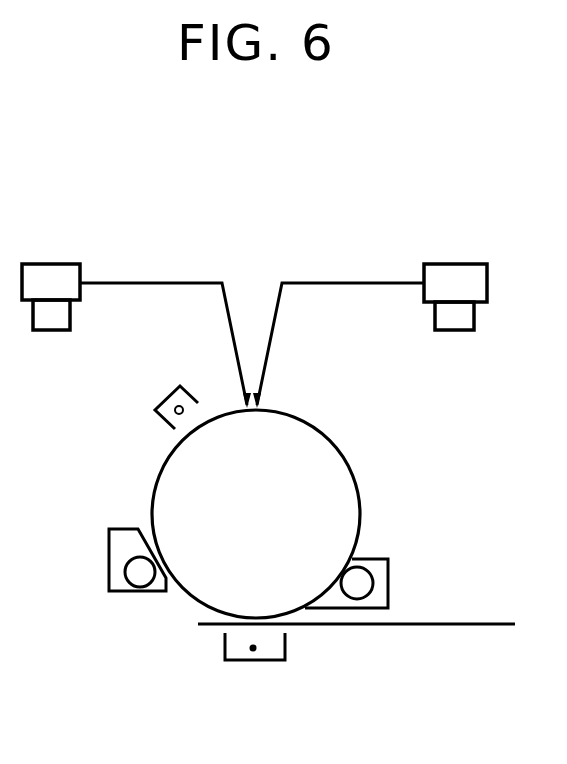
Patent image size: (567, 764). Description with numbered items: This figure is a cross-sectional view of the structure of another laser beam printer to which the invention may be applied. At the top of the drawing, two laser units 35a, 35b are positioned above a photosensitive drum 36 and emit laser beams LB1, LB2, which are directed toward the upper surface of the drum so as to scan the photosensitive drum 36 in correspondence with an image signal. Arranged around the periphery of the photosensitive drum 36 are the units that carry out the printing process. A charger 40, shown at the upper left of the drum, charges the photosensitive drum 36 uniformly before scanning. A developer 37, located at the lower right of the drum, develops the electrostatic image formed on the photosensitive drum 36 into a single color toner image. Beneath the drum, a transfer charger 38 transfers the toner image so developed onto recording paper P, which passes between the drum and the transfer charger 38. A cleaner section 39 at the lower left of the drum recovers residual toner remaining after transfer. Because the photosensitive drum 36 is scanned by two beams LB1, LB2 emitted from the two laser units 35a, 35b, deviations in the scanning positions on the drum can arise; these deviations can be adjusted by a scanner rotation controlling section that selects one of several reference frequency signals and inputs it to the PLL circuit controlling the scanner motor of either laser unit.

The laser unit 35a is at (43, 262).
The laser unit 35b is at (453, 262).
The laser beam LB1 is at (163, 282).
The laser beam LB2 is at (337, 282).
The photosensitive drum 36 is at (354, 472).
The developer 37 is at (388, 580).
The transfer charger 38 is at (253, 661).
The cleaner section 39 is at (109, 545).
The charger 40 is at (163, 397).
The recording paper P is at (445, 626).